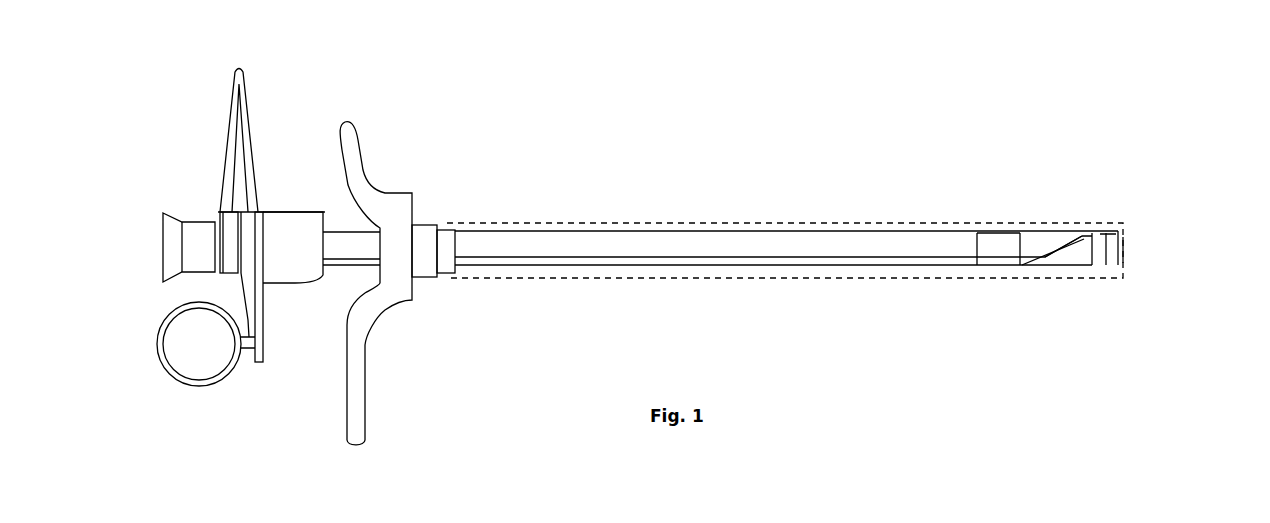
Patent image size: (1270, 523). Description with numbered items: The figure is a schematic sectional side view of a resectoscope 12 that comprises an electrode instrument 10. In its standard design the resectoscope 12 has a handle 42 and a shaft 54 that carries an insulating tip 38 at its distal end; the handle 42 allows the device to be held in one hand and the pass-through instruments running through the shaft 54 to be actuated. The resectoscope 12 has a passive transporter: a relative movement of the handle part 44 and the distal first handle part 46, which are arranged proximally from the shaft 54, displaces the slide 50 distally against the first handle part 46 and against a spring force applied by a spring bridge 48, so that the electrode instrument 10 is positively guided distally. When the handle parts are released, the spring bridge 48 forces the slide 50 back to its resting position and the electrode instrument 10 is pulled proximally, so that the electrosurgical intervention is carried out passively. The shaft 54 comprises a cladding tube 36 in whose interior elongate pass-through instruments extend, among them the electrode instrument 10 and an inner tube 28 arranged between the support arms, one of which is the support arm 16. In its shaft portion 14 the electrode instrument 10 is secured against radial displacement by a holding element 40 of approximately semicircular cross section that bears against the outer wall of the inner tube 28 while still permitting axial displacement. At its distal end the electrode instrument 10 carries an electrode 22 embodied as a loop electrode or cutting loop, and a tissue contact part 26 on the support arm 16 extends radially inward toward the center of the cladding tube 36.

The electrode instrument 10 is at (1052, 260).
The resectoscope 12 is at (626, 178).
The shaft portion 14 is at (697, 254).
The support arm 16 is at (1055, 235).
The electrode 22 is at (1133, 250).
The tissue contact part 26 is at (1100, 268).
The inner tube 28 is at (808, 238).
The cladding tube 36 is at (880, 225).
The insulating tip 38 is at (1108, 228).
The holding element 40 is at (993, 245).
The handle 42 is at (242, 386).
The handle part 44 is at (165, 354).
The first handle part 46 is at (370, 174).
The spring bridge 48 is at (252, 95).
The slide 50 is at (275, 235).
The shaft 54 is at (858, 291).